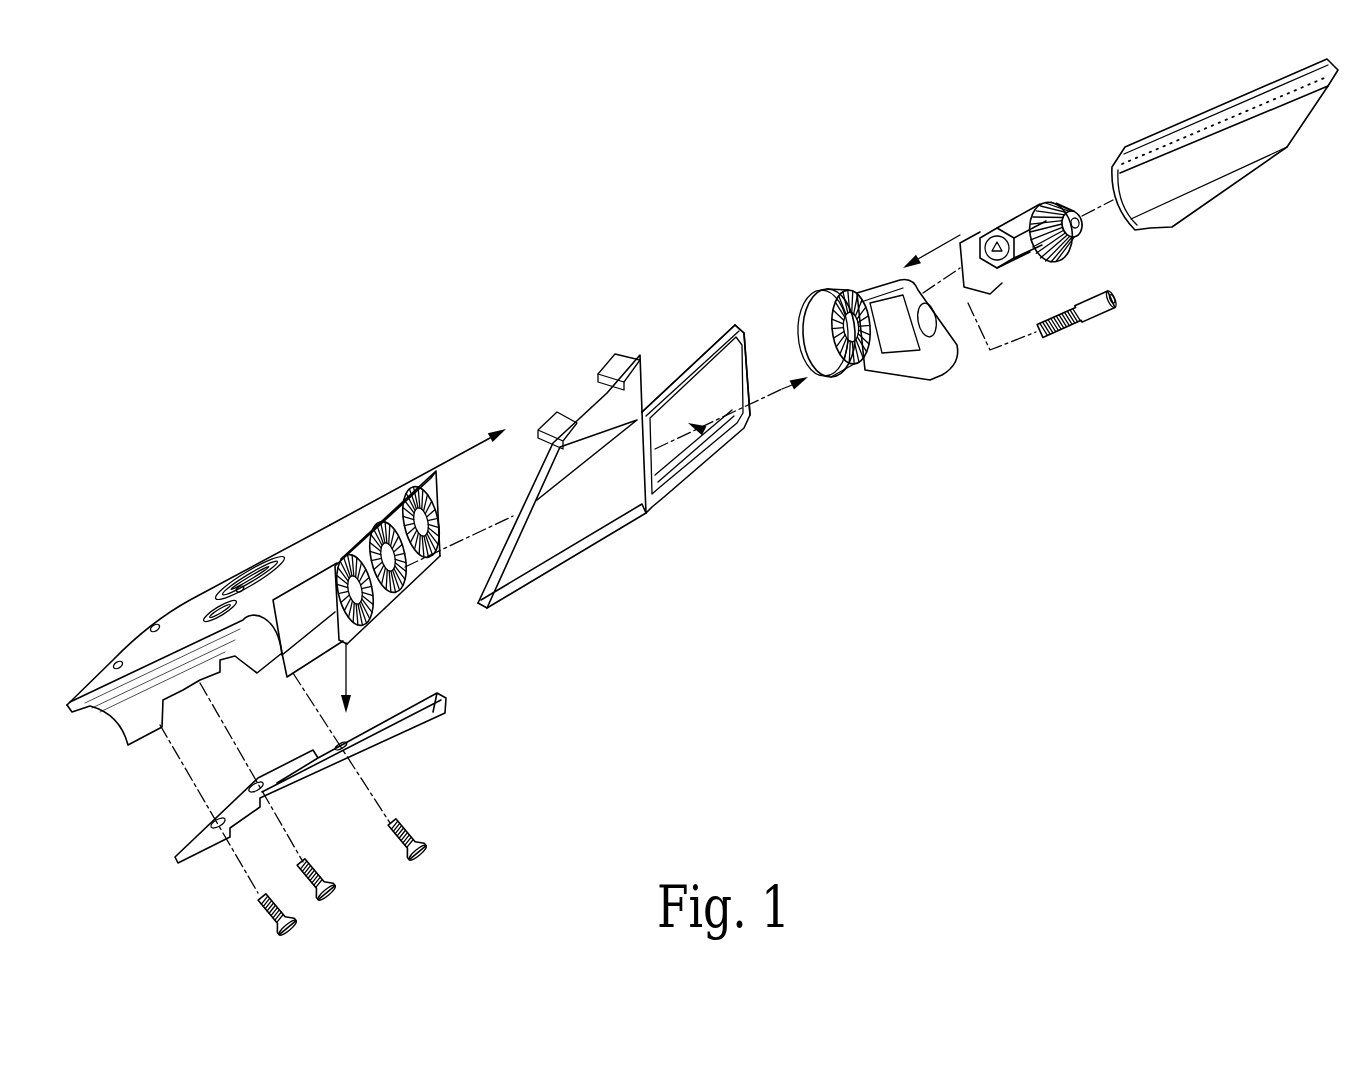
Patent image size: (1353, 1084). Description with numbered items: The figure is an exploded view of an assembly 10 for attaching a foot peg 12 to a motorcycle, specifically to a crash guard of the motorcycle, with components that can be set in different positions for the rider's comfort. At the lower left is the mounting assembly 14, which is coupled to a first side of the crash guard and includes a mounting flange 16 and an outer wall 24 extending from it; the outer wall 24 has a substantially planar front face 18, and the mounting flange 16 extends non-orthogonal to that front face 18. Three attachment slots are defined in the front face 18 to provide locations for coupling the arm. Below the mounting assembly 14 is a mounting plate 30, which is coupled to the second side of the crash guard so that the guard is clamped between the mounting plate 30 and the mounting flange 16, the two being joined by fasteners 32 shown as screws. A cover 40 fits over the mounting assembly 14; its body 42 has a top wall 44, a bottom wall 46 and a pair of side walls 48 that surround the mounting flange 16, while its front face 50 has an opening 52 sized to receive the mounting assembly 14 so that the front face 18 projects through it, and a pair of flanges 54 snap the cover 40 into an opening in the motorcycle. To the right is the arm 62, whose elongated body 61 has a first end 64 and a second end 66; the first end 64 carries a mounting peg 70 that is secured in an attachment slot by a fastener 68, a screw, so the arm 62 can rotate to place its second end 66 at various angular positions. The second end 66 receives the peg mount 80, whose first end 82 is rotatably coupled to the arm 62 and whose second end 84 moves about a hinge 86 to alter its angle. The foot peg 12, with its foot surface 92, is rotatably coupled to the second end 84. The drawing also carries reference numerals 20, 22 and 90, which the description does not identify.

The assembly 10 is at (352, 198).
The foot peg 12 is at (1240, 98).
The mounting assembly 14 is at (236, 566).
The mounting flange 16 is at (178, 613).
The front face 18 is at (395, 512).
The longitudinal direction arrow 20 is at (447, 462).
The recess 22 is at (352, 665).
The outer wall 24 is at (416, 575).
The mounting plate 30 is at (448, 698).
The fasteners 32 is at (292, 930).
The cover 40 is at (657, 372).
The body 42 is at (695, 356).
The top wall 44 is at (617, 354).
The bottom wall 46 is at (600, 545).
The side walls 48 is at (553, 540).
The front face 50 is at (675, 493).
The opening 52 is at (704, 431).
The flanges 54 is at (599, 372).
The elongated body 61 is at (917, 386).
The arm 62 is at (887, 364).
The first end 64 is at (815, 300).
The second end 66 is at (947, 362).
The fastener 68 is at (1062, 328).
The mounting peg 70 is at (810, 388).
The peg mount 80 is at (1049, 206).
The first end 82 is at (963, 240).
The second end 84 is at (1083, 238).
The hinge 86 is at (997, 230).
The arrow 90 is at (930, 252).
The foot surface 92 is at (1162, 140).